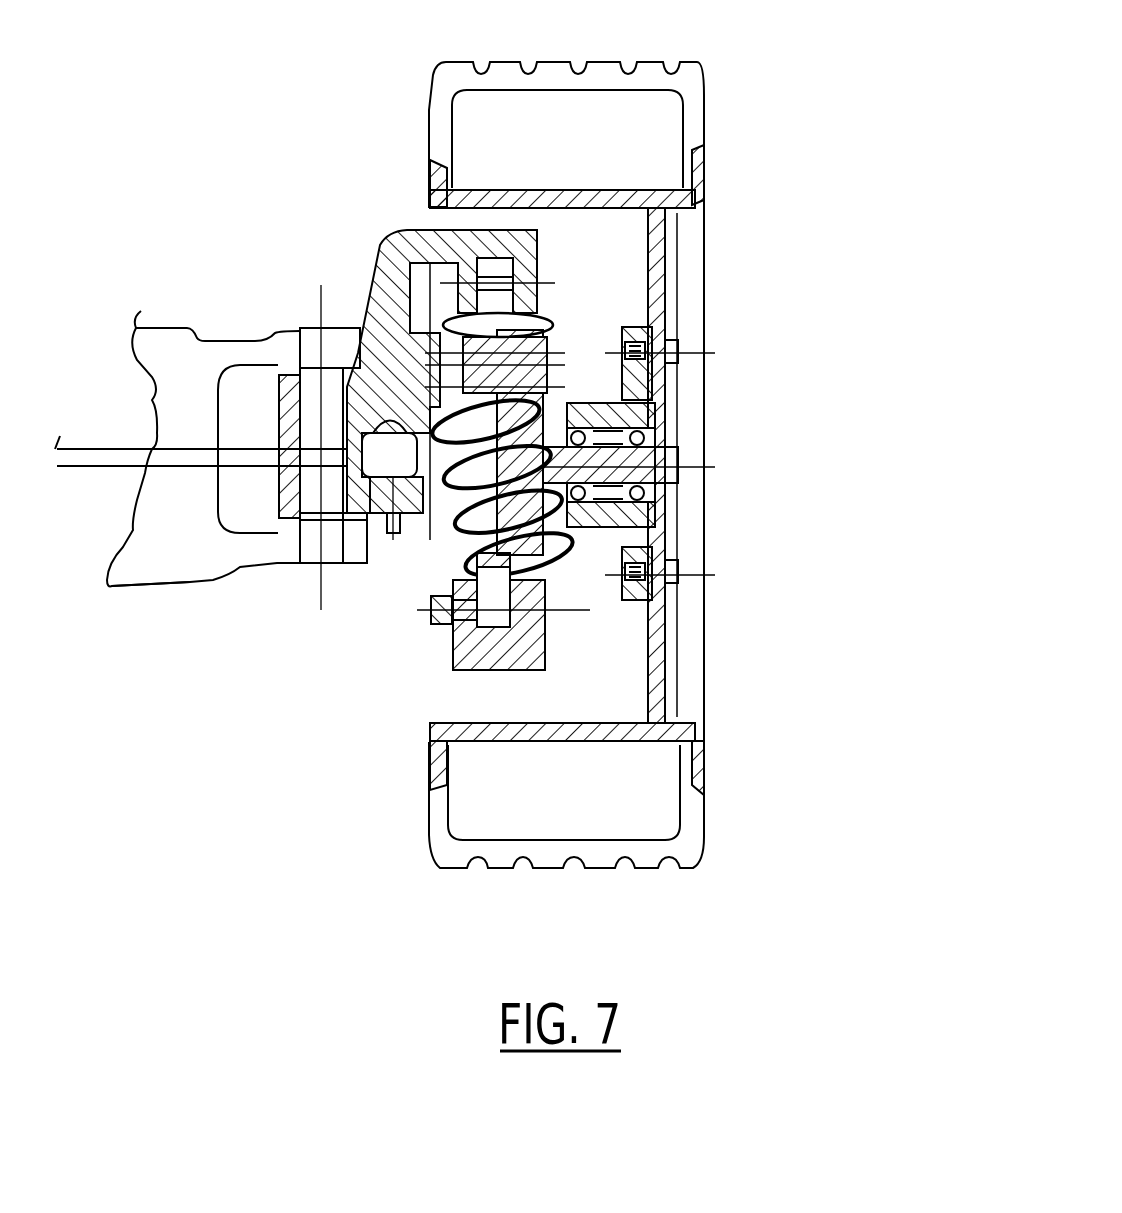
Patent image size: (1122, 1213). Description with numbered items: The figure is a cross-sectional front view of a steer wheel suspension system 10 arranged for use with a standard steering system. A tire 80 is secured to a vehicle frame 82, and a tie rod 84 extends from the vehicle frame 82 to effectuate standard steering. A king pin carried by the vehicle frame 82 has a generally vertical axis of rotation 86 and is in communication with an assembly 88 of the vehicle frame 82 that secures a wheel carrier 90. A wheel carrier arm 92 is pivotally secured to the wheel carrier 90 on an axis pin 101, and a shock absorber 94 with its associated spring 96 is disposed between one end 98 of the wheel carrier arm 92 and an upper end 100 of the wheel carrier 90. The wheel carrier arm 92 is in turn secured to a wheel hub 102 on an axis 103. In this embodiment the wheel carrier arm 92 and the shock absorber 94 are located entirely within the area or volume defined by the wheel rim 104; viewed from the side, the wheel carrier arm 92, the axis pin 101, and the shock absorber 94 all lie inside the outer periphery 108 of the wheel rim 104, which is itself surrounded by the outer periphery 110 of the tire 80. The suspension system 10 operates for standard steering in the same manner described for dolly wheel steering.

The suspension system 10 is at (257, 712).
The tire 80 is at (712, 112).
The vehicle frame 82 is at (210, 324).
The tie rod 84 is at (334, 326).
The vertical axis of rotation 86 is at (320, 610).
The assembly 88 is at (250, 330).
The wheel carrier 90 is at (401, 226).
The wheel carrier arm 92 is at (557, 585).
The shock absorber 94 is at (490, 470).
The spring 96 is at (442, 515).
The end of the wheel carrier arm 98 is at (447, 670).
The upper end of the wheel carrier 100 is at (547, 262).
The axis pin 101 is at (557, 345).
The wheel hub 102 is at (648, 408).
The axis 103 is at (657, 447).
The wheel rim 104 is at (705, 738).
The outer periphery of the wheel rim 108 is at (580, 718).
The outer periphery of the tire 110 is at (650, 60).